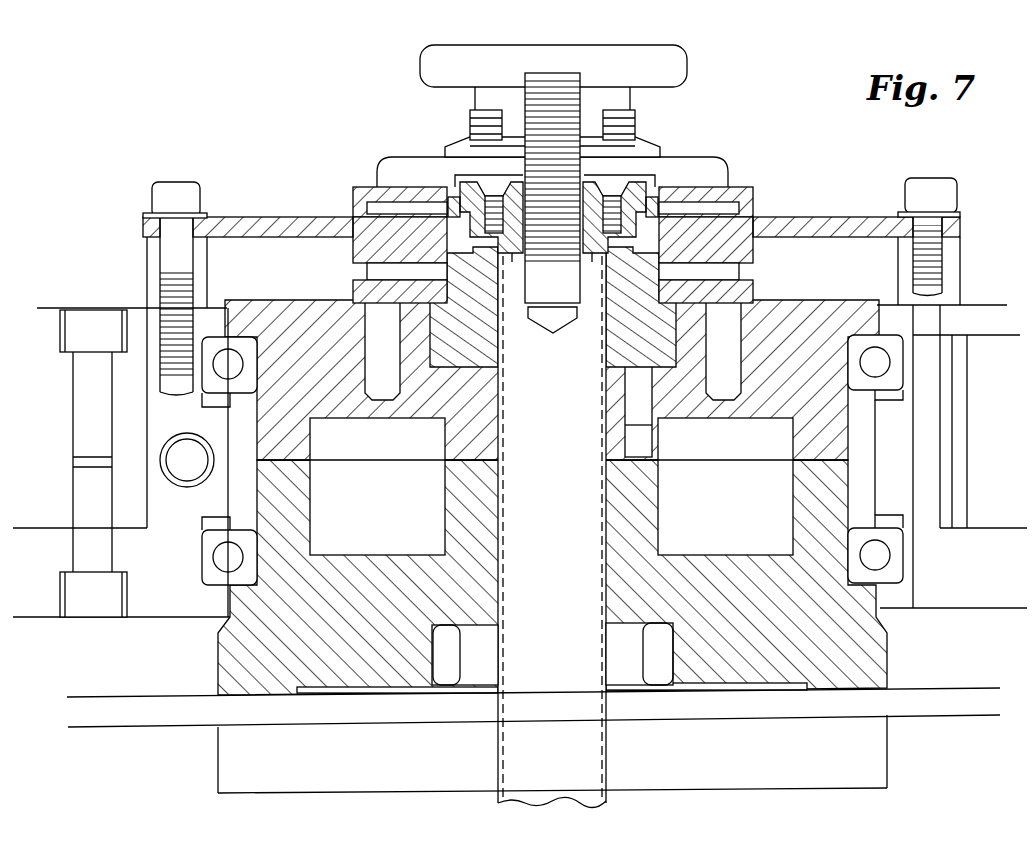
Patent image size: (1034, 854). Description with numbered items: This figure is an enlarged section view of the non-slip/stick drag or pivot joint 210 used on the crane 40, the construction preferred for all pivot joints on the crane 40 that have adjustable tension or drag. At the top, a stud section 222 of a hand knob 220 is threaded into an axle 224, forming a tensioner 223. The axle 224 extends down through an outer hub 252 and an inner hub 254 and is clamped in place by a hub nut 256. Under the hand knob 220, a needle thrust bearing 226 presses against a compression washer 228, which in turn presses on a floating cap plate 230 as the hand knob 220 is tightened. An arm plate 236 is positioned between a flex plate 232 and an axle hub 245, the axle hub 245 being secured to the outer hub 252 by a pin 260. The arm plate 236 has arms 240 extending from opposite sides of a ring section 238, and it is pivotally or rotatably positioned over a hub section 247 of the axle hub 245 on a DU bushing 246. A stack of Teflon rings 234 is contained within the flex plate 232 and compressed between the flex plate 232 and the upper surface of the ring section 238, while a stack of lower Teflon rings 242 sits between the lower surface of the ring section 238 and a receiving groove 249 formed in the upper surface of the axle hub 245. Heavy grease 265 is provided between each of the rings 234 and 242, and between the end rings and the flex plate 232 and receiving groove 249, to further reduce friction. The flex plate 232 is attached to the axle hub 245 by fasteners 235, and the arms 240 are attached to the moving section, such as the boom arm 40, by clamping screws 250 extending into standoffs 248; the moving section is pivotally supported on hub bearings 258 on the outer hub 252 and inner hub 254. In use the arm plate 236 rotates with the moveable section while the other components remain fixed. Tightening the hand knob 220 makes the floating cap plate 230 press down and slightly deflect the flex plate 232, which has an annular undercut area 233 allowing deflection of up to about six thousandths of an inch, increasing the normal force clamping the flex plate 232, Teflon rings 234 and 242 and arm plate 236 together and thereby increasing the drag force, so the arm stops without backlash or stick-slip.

The crane 40 is at (43, 577).
The pivot joint 210 is at (533, 183).
The hand knob 220 is at (661, 56).
The stud section 222 is at (578, 93).
The tensioner 223 is at (697, 63).
The axle 224 is at (528, 771).
The needle thrust bearing 226 is at (472, 122).
The compression washer 228 is at (462, 138).
The floating cap plate 230 is at (683, 162).
The flex plate 232 is at (745, 187).
The annular undercut area 233 is at (398, 186).
The Teflon rings 234 is at (755, 206).
The fasteners 235 is at (613, 197).
The arm plate 236 is at (341, 264).
The ring section 238 is at (756, 253).
The arms 240 is at (884, 232).
The lower Teflon rings 242 is at (756, 283).
The axle hub 245 is at (613, 318).
The DU bushing 246 is at (663, 345).
The hub section 247 is at (426, 190).
The standoffs 248 is at (943, 252).
The receiving groove 249 is at (490, 343).
The clamping screw 250 is at (167, 197).
The outer hub 252 is at (763, 397).
The inner hub 254 is at (731, 600).
The hub nut 256 is at (627, 670).
The hub bearing 258 is at (205, 550).
The pin 260 is at (642, 398).
The heavy grease 265 is at (346, 242).